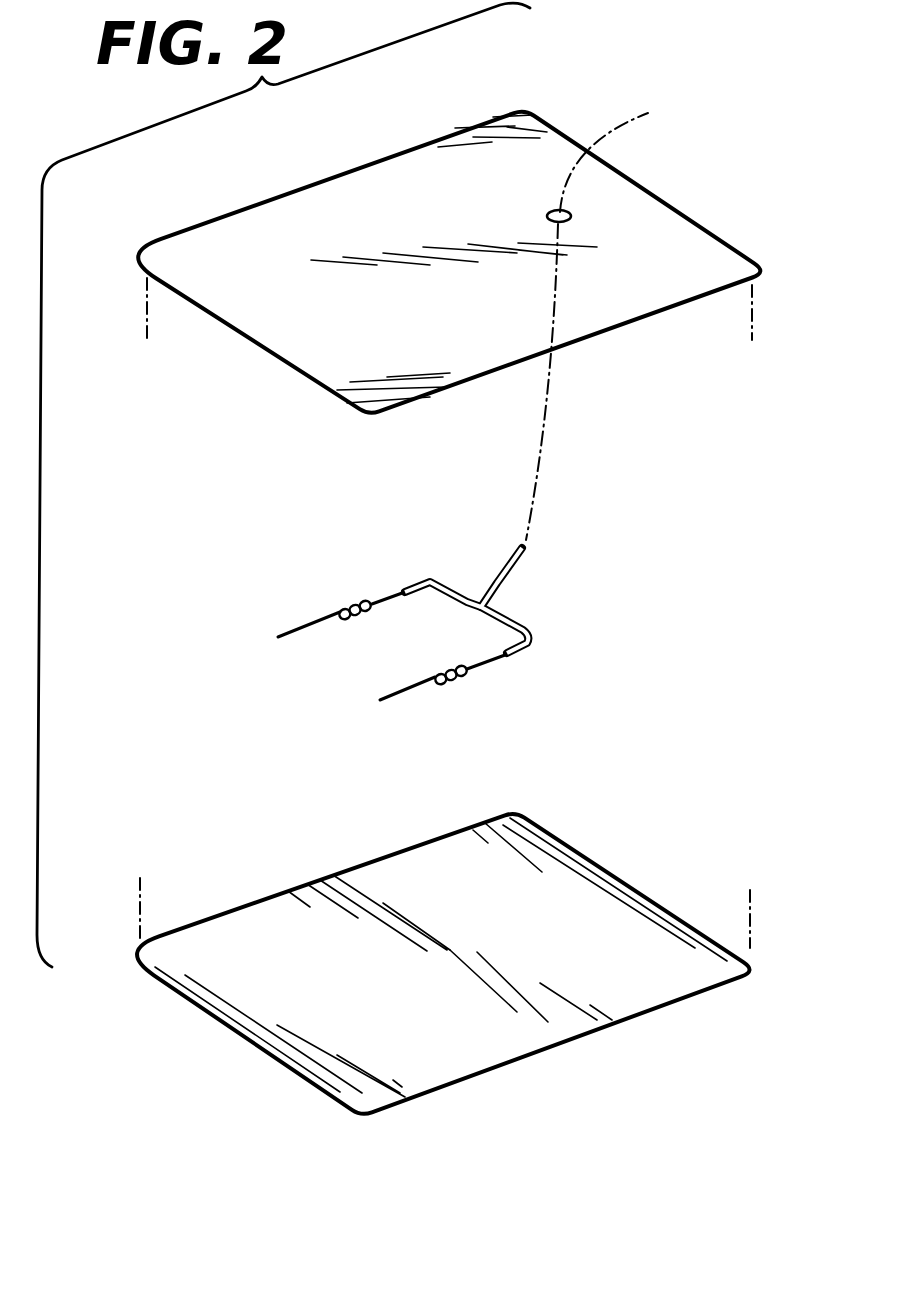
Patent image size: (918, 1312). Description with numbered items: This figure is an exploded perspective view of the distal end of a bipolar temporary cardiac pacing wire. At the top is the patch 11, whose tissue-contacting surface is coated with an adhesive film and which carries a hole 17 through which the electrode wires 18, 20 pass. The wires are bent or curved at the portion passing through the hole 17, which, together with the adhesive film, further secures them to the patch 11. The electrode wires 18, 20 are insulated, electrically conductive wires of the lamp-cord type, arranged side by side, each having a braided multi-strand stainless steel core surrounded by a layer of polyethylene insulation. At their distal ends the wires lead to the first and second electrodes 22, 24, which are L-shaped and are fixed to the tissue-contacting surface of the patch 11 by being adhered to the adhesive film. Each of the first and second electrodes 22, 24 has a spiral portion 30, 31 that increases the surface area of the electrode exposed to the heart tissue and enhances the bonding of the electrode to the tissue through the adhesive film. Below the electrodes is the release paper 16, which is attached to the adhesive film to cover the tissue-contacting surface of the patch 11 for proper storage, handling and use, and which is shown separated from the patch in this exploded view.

The patch 11 is at (698, 245).
The release paper 16 is at (480, 1043).
The hole 17 is at (557, 210).
The electrode wire 18 is at (521, 584).
The electrode wire 20 is at (527, 582).
The first electrode 22 is at (298, 628).
The second electrode 24 is at (408, 690).
The spiral portion 30 is at (350, 602).
The spiral portion 31 is at (455, 678).